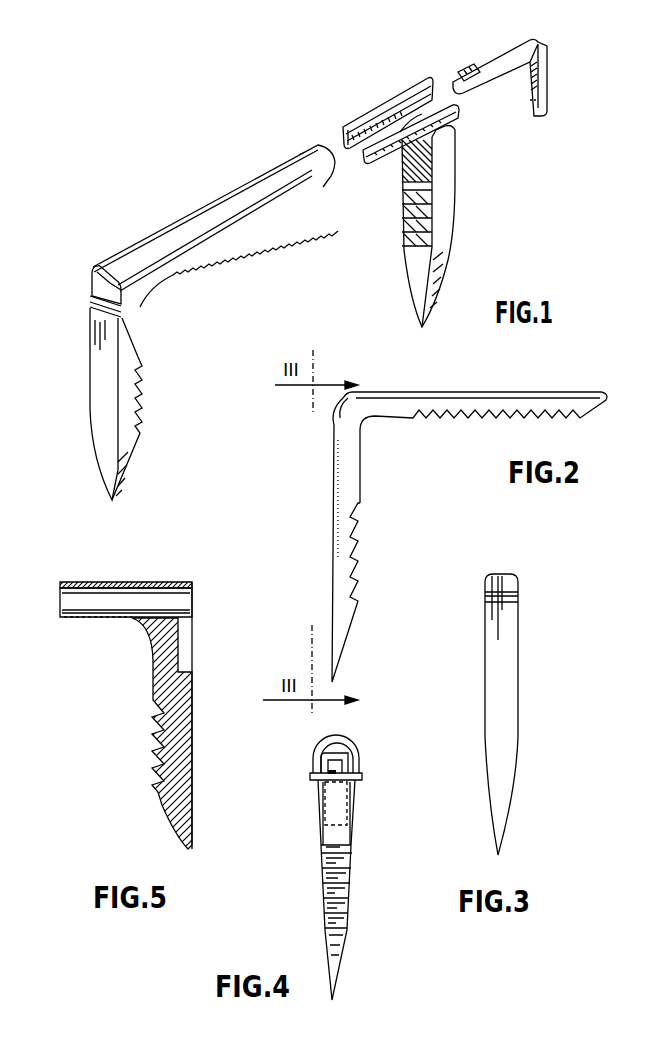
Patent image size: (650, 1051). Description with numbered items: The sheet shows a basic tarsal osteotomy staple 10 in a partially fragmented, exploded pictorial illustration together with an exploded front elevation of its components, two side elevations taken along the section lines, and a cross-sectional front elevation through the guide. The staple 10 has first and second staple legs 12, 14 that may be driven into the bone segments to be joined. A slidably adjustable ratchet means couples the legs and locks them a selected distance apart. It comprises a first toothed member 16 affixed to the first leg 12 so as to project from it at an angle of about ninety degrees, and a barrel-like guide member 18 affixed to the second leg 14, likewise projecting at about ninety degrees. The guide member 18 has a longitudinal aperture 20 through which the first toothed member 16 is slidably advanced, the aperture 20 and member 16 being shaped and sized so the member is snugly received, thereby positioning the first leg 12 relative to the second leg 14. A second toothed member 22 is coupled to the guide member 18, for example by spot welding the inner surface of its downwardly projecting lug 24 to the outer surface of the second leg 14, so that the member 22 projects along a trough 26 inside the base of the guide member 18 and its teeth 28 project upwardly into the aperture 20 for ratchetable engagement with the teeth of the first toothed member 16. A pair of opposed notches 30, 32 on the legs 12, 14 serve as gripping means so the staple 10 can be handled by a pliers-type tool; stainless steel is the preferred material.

In FIG. 1, the tarsal osteotomy staple 10 is at (245, 315).
In FIG. 1, the first staple leg 12 is at (125, 438).
In FIG. 2, the first staple leg 12 is at (335, 570).
In FIG. 3, the first staple leg 12 is at (490, 713).
In FIG. 1, the second staple leg 14 is at (436, 264).
In FIG. 4, the second staple leg 14 is at (340, 980).
In FIG. 5, the second staple leg 14 is at (185, 830).
In FIG. 1, the first toothed member 16 is at (231, 232).
In FIG. 2, the first toothed member 16 is at (497, 422).
In FIG. 1, the guide member 18 is at (368, 122).
In FIG. 4, the guide member 18 is at (360, 746).
In FIG. 5, the guide member 18 is at (165, 582).
In FIG. 1, the longitudinal aperture 20 is at (345, 145).
In FIG. 4, the longitudinal aperture 20 is at (355, 766).
In FIG. 5, the longitudinal aperture 20 is at (68, 603).
In FIG. 1, the second toothed member 22 is at (505, 58).
In FIG. 1, the downwardly projecting lug 24 is at (527, 93).
In FIG. 1, the trough 26 is at (355, 155).
In FIG. 4, the trough 26 is at (320, 760).
In FIG. 5, the trough 26 is at (130, 618).
In FIG. 1, the teeth 28 is at (460, 78).
In FIG. 1, the notch 30 is at (124, 308).
In FIG. 2, the notch 30 is at (331, 427).
In FIG. 3, the notch 30 is at (485, 598).
In FIG. 1, the notch 32 is at (455, 128).